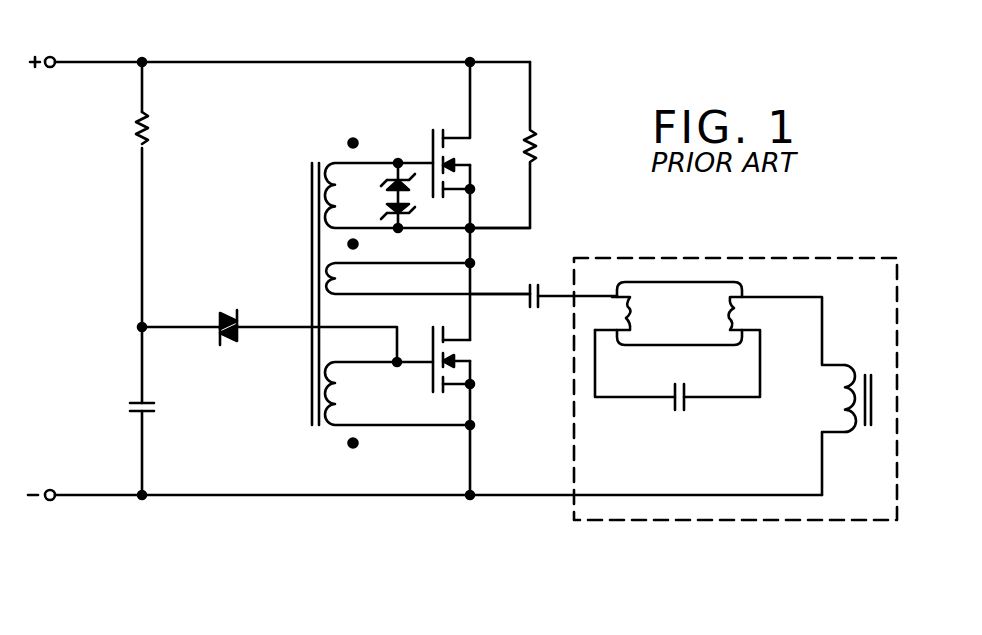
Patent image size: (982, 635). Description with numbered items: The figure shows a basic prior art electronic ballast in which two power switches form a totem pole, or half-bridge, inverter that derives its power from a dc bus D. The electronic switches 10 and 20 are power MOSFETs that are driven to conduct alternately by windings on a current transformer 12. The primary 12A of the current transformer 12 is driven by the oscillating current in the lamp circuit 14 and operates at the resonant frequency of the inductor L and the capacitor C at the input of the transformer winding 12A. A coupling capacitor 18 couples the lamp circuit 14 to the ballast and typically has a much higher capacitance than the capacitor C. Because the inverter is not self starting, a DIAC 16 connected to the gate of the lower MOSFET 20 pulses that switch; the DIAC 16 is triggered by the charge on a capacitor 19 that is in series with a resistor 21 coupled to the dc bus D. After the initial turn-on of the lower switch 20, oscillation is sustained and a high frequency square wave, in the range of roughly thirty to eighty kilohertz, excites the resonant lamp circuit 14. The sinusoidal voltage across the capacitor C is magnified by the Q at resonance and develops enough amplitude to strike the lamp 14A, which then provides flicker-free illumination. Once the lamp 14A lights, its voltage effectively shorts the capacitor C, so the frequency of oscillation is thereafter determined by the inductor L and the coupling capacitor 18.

The dc bus D is at (301, 62).
The electronic switch 10 is at (430, 149).
The current transformer 12 is at (300, 226).
The primary of transformer 12A is at (330, 283).
The lamp circuit 14 is at (736, 363).
The lamp 14A is at (665, 282).
The DIAC 16 is at (214, 345).
The coupling capacitor 18 is at (522, 306).
The capacitor 19 is at (122, 410).
The lower MOSFET 20 is at (477, 352).
The resistor 21 is at (134, 124).
The capacitor C is at (680, 413).
The inductor L is at (871, 398).